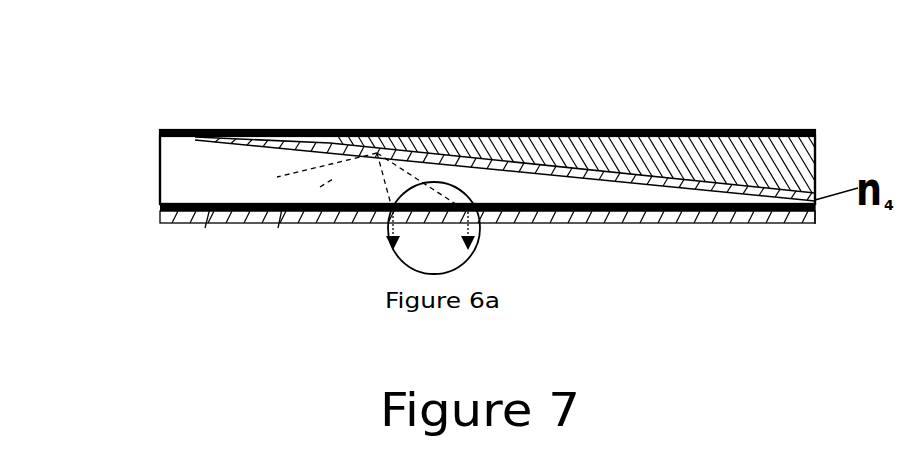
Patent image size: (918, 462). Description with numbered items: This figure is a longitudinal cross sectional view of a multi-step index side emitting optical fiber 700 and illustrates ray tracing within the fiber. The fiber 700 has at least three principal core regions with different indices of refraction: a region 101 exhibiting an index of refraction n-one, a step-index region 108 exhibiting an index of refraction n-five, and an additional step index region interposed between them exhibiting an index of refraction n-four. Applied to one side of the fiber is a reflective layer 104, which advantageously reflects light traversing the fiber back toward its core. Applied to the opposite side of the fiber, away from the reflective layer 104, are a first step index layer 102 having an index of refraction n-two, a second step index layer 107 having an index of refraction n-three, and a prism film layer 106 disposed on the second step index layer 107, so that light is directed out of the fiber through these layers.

The optical fiber 700 is at (487, 163).
The reflective layer 104 is at (197, 130).
The region 101 is at (163, 170).
The step-index region 108 is at (638, 170).
The step index layer 102 is at (163, 224).
The second step index layer 107 is at (612, 222).
The prism film layer 106 is at (800, 218).